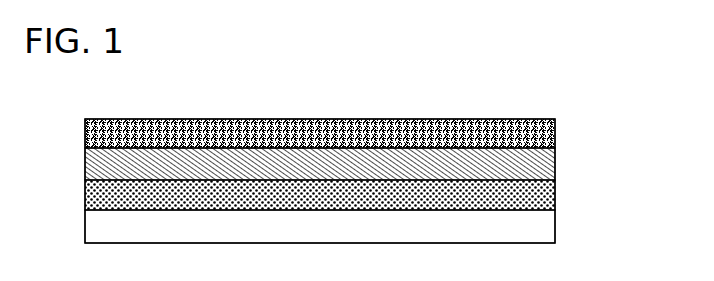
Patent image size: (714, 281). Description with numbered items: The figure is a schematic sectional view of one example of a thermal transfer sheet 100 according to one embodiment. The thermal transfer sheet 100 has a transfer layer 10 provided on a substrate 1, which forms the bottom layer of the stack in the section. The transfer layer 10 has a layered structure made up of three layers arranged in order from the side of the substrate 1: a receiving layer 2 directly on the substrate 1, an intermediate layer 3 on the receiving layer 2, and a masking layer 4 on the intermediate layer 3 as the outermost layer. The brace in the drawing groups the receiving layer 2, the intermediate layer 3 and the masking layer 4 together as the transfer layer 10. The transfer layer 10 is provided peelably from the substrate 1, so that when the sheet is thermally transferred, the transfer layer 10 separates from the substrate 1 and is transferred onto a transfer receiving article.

The thermal transfer sheet 100 is at (383, 143).
The transfer layer 10 is at (383, 161).
The masking layer 4 is at (540, 130).
The intermediate layer 3 is at (556, 167).
The receiving layer 2 is at (525, 194).
The substrate 1 is at (528, 226).